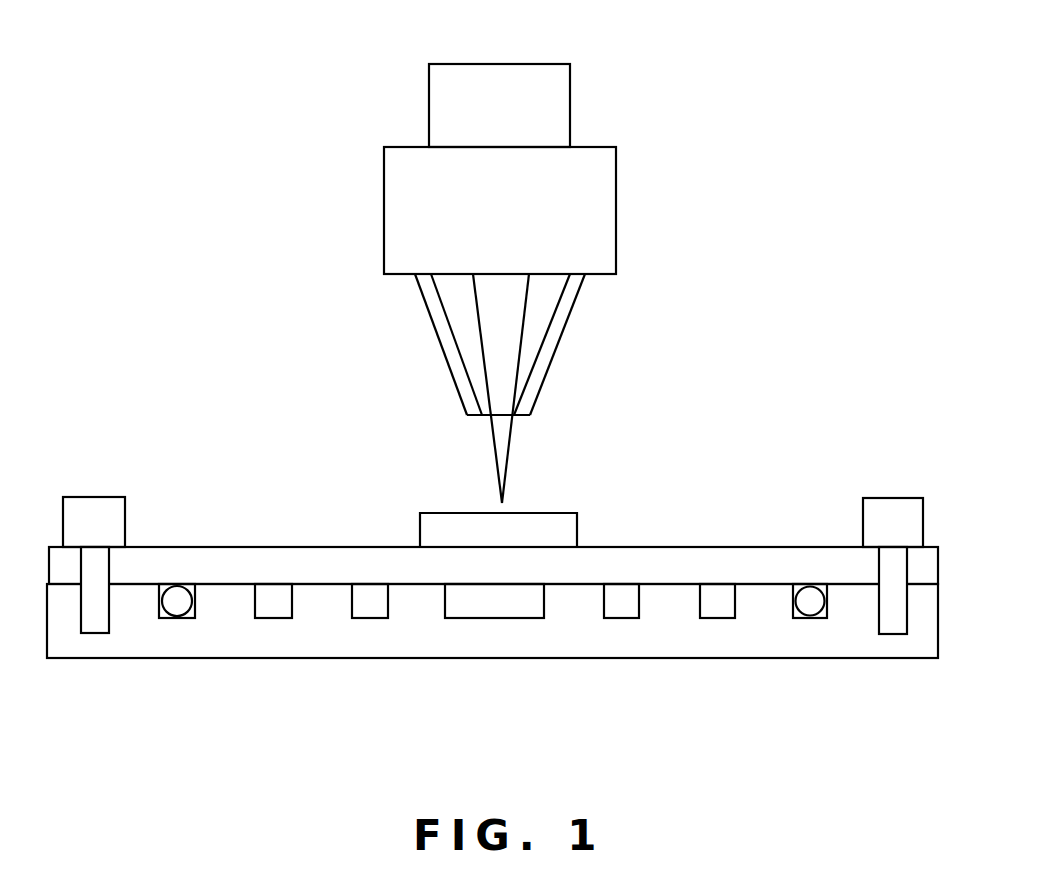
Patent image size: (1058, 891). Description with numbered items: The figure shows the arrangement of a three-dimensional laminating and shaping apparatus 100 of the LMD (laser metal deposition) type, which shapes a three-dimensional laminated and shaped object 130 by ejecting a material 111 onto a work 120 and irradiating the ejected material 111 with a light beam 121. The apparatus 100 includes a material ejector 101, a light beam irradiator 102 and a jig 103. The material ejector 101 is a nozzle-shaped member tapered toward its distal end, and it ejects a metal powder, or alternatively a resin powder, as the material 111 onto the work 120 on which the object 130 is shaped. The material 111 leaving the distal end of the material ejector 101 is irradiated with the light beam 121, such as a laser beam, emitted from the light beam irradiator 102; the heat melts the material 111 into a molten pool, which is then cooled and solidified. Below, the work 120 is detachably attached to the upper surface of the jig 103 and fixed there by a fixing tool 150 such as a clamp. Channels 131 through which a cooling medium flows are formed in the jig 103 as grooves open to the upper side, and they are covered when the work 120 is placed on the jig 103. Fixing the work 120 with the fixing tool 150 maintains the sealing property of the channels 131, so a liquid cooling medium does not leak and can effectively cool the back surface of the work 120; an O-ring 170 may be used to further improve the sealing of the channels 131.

The three-dimensional laminating and shaping apparatus 100 is at (167, 149).
The material ejector 101 is at (616, 210).
The light beam irradiator 102 is at (572, 112).
The jig 103 is at (938, 618).
The material 111 is at (532, 393).
The work 120 is at (939, 567).
The light beam 121 is at (492, 447).
The three-dimensional laminated and shaped object 130 is at (558, 512).
The channels 131 is at (272, 618).
The fixing tool 150 is at (95, 497).
The O-ring 170 is at (177, 585).